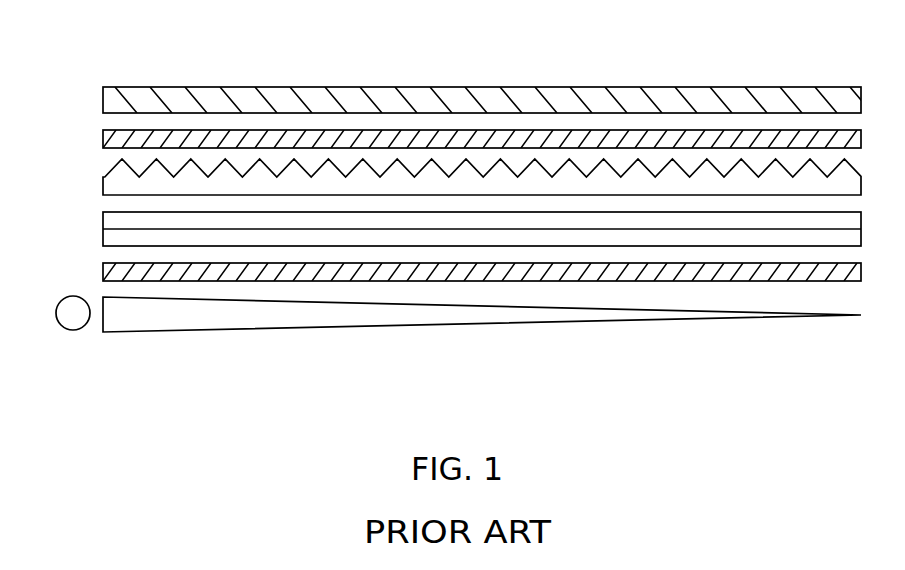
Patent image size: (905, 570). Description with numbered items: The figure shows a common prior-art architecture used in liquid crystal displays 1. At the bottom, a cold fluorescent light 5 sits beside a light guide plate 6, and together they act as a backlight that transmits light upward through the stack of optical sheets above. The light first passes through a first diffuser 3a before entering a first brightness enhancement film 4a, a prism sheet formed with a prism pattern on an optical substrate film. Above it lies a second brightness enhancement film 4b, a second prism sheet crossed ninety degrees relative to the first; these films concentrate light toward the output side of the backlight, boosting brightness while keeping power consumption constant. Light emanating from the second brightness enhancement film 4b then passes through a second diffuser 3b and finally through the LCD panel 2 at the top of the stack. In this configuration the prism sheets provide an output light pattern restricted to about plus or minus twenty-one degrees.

The liquid crystal display 1 is at (433, 56).
The LCD panel 2 is at (103, 99).
The second diffuser 3b is at (103, 139).
The second brightness enhancement film 4b is at (103, 186).
The first brightness enhancement film 4a is at (103, 225).
The first diffuser 3a is at (103, 272).
The cold fluorescent light 5 is at (73, 331).
The light guide plate 6 is at (433, 325).